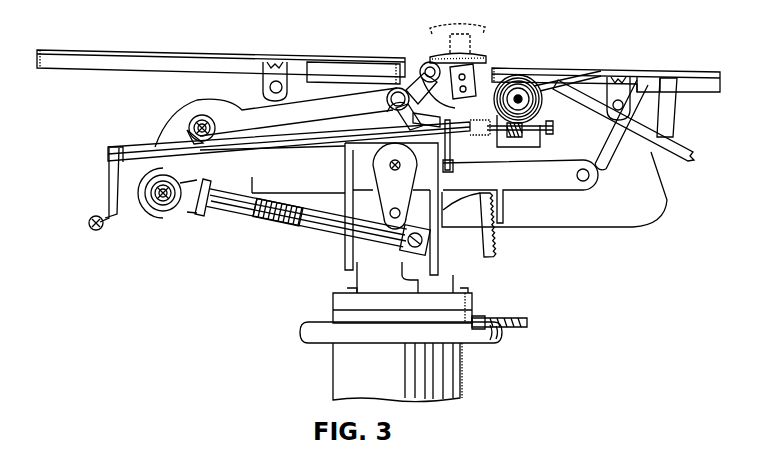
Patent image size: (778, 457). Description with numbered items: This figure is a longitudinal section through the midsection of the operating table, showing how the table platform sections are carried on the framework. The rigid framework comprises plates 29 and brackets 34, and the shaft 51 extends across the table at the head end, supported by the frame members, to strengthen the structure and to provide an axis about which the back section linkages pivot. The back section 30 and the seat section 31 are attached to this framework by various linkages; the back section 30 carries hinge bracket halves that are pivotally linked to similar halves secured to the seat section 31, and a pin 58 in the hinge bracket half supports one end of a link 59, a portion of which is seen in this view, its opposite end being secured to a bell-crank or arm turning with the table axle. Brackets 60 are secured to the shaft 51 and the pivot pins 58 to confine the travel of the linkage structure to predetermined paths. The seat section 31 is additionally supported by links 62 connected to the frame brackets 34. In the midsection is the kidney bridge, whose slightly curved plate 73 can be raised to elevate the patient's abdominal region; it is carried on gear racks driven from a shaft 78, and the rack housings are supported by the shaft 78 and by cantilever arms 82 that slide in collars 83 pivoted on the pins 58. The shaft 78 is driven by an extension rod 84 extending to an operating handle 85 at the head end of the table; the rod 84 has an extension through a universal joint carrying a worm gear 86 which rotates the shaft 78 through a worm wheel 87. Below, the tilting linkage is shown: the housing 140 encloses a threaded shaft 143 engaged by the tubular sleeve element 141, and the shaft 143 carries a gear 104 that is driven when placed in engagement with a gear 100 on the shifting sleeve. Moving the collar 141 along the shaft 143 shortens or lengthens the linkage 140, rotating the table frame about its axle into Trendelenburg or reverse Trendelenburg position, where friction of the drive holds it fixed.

The back section 30 is at (103, 52).
The bracket 60 is at (237, 115).
The pin 58 is at (395, 88).
The plate 73 is at (440, 57).
The shaft 78 is at (517, 100).
The worm wheel 87 is at (537, 88).
The seat section 31 is at (648, 75).
The shaft 51 is at (193, 123).
The link 59 is at (381, 121).
The worm gear 86 is at (521, 138).
The extension rod 84 is at (287, 148).
The cantilever arm 82 is at (446, 148).
The collar 83 is at (410, 122).
The link 62 is at (596, 160).
The operating handle 85 is at (112, 202).
The gear 100 is at (167, 212).
The gear 104 is at (174, 208).
The threaded shaft 143 is at (262, 228).
The tubular sleeve element 141 is at (277, 230).
The housing 140 is at (332, 243).
The bracket 34 is at (535, 183).
The plate 29 is at (648, 212).